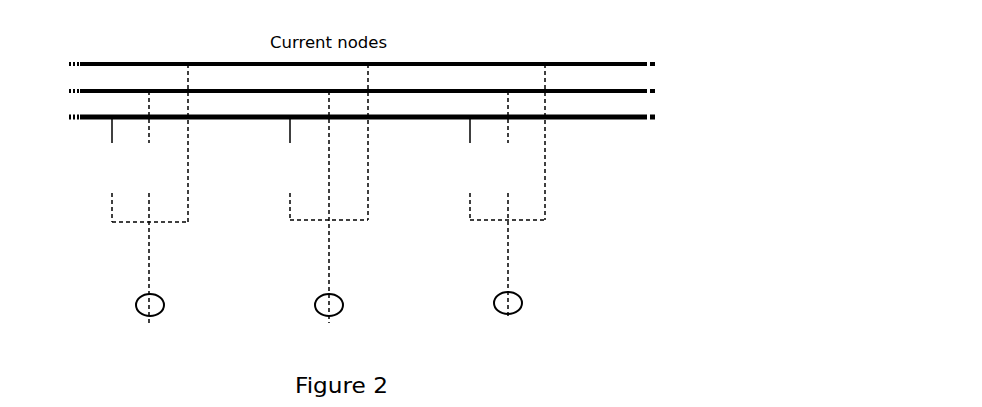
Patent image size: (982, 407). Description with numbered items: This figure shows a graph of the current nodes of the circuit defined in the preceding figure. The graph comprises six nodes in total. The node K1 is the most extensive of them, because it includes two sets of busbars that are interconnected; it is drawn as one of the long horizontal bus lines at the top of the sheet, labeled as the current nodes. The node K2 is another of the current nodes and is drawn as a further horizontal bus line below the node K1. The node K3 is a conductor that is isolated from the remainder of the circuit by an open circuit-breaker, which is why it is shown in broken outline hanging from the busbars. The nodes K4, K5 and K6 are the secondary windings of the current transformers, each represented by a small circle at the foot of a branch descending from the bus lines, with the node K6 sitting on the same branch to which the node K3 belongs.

The node K1 is at (522, 52).
The node K2 is at (593, 133).
The node K3 is at (536, 277).
The node K4 is at (164, 306).
The node K5 is at (343, 306).
The node K6 is at (522, 303).